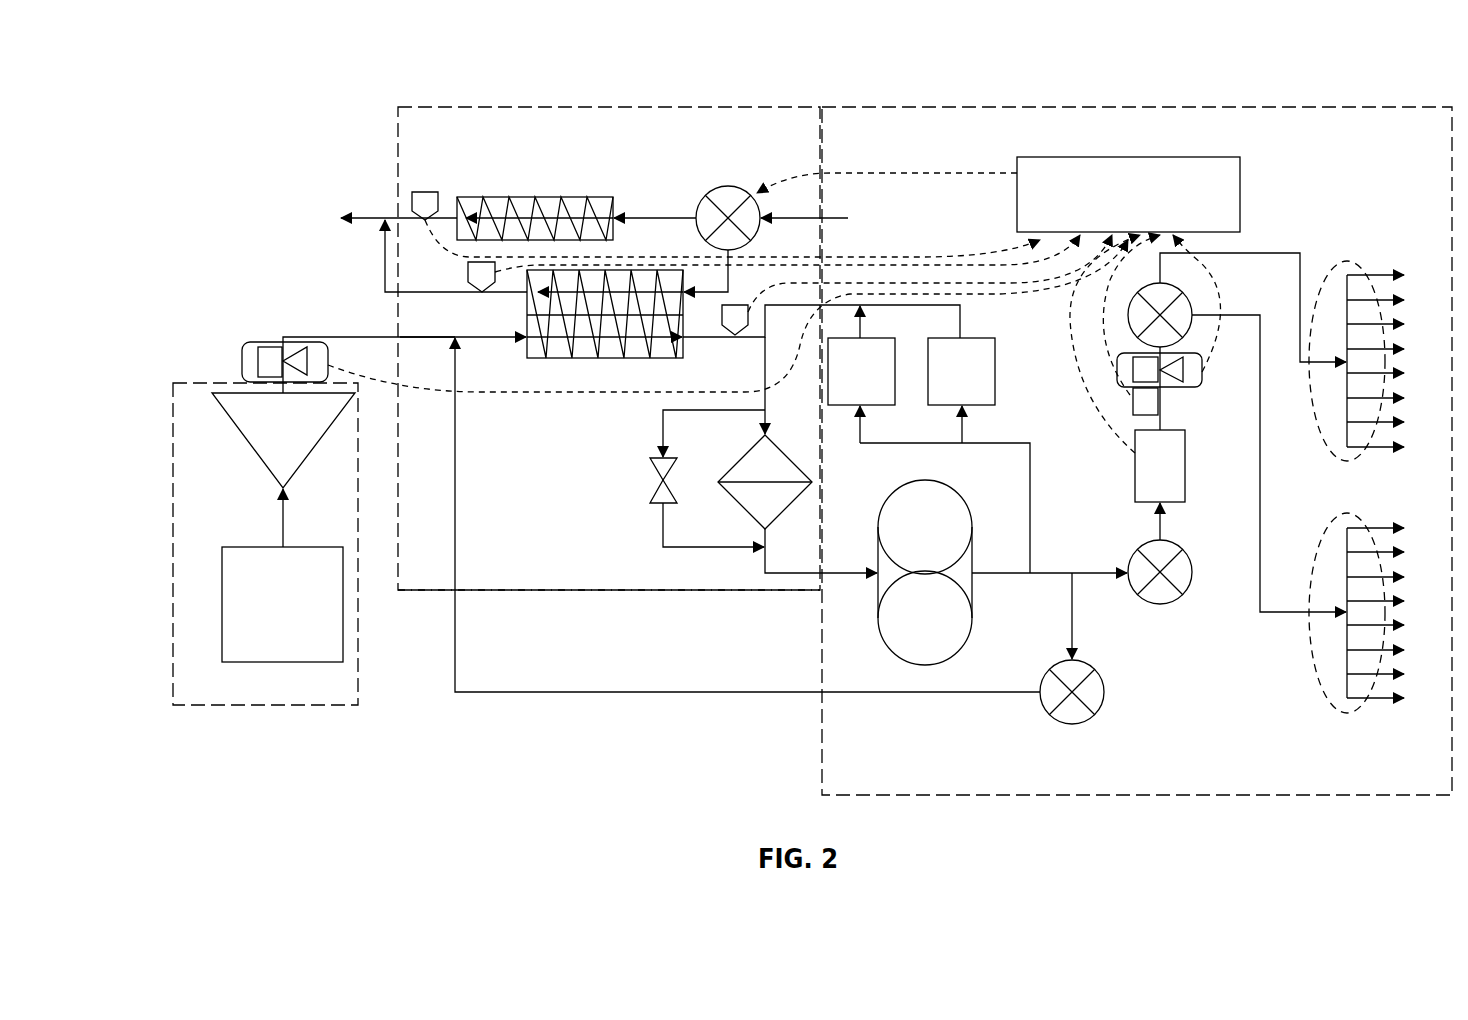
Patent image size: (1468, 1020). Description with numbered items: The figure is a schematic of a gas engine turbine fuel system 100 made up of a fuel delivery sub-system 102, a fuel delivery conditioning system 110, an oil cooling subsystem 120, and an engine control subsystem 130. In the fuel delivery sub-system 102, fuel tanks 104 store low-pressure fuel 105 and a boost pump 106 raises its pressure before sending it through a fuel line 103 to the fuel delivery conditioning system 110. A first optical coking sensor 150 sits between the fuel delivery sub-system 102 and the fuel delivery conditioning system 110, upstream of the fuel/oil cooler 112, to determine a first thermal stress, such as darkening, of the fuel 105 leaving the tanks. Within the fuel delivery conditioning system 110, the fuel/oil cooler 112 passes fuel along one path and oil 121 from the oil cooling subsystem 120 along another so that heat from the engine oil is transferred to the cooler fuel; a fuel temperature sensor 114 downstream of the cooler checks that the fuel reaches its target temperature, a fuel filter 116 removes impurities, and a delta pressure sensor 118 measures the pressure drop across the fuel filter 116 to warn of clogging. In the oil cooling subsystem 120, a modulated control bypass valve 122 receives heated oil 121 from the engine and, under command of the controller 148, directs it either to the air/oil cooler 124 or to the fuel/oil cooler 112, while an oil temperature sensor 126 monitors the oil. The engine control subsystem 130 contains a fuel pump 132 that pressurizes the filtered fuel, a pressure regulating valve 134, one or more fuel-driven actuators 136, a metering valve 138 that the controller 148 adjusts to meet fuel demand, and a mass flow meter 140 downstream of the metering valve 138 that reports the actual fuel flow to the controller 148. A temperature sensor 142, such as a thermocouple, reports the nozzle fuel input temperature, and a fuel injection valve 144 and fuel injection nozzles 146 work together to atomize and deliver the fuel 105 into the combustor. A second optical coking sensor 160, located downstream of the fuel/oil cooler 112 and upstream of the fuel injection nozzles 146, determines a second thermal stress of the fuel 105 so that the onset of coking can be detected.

The gas engine turbine fuel system 100 is at (300, 106).
The fuel delivery sub-system 102 is at (165, 465).
The fuel line 103 is at (437, 340).
The fuel tanks 104 is at (278, 545).
The fuel 105 is at (283, 335).
The boost pump 106 is at (255, 457).
The fuel delivery conditioning system 110 is at (560, 595).
The fuel/oil cooler 112 is at (532, 360).
The fuel temperature sensor 114 is at (467, 282).
The fuel filter 116 is at (745, 468).
The delta pressure sensor 118 is at (650, 462).
The oil cooling subsystem 120 is at (445, 97).
The oil 121 is at (385, 216).
The modulated control bypass valve 122 is at (697, 213).
The air/oil cooler 124 is at (580, 195).
The oil temperature sensor 126 is at (410, 193).
The engine control subsystem 130 is at (868, 97).
The fuel pump 132 is at (978, 548).
The pressure regulating valve 134 is at (1050, 672).
The fuel-driven actuators 136 is at (996, 352).
The metering valve 138 is at (1180, 548).
The mass flow meter 140 is at (1135, 470).
The fuel temperature sensor 142 is at (1135, 405).
The fuel injection valve 144 is at (1193, 315).
The fuel injection nozzles 146 is at (1333, 268).
The controller 148 is at (1242, 175).
The first optical coking sensor 150 is at (258, 345).
The second optical coking sensor 160 is at (1203, 378).